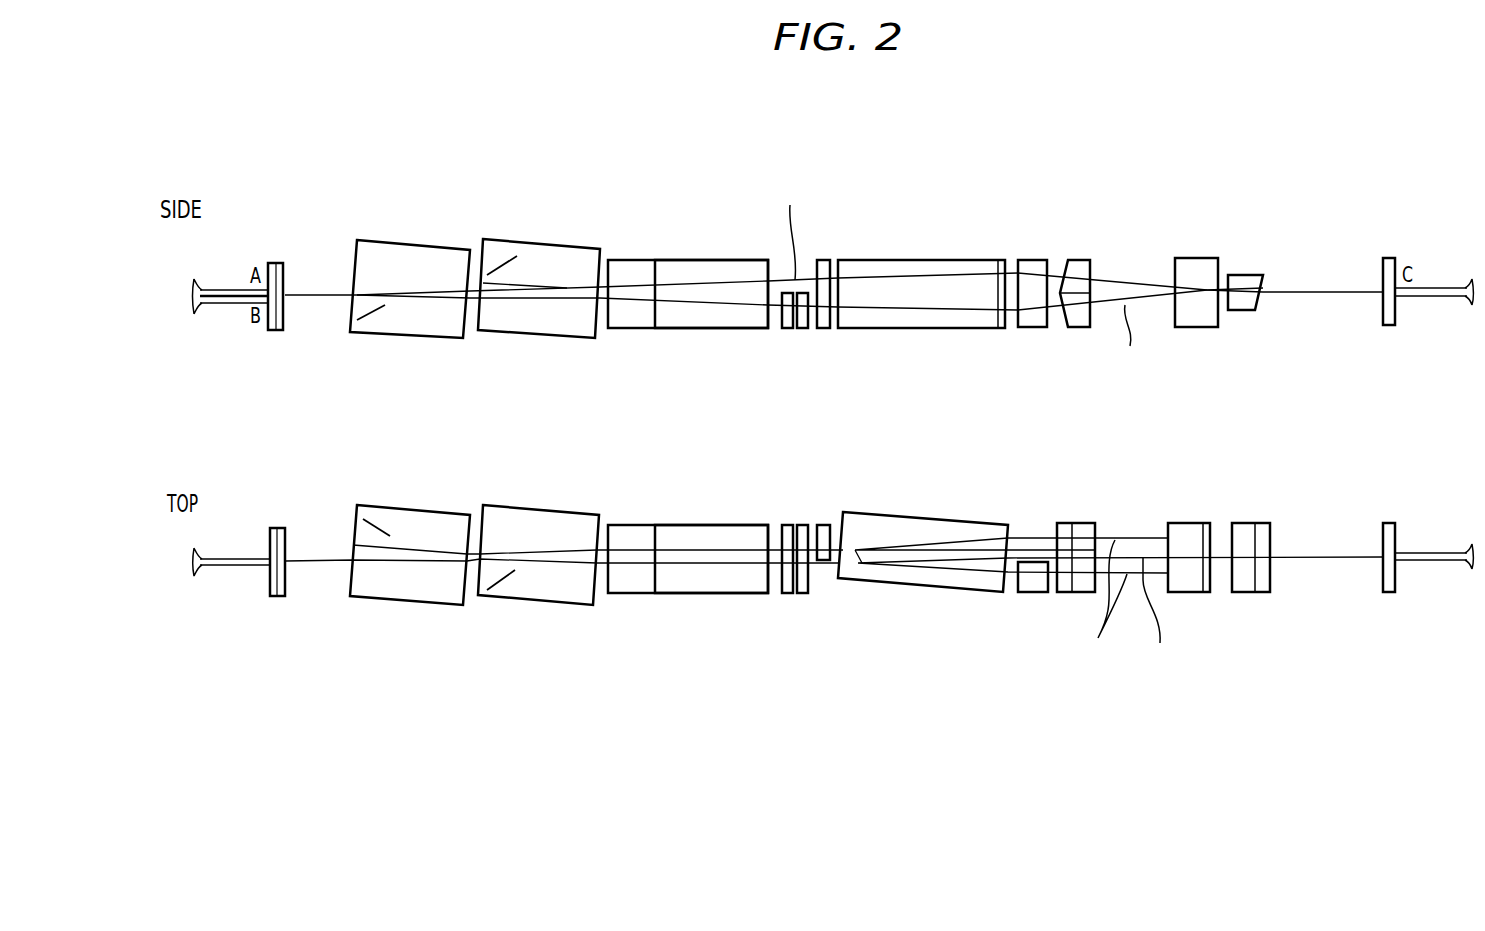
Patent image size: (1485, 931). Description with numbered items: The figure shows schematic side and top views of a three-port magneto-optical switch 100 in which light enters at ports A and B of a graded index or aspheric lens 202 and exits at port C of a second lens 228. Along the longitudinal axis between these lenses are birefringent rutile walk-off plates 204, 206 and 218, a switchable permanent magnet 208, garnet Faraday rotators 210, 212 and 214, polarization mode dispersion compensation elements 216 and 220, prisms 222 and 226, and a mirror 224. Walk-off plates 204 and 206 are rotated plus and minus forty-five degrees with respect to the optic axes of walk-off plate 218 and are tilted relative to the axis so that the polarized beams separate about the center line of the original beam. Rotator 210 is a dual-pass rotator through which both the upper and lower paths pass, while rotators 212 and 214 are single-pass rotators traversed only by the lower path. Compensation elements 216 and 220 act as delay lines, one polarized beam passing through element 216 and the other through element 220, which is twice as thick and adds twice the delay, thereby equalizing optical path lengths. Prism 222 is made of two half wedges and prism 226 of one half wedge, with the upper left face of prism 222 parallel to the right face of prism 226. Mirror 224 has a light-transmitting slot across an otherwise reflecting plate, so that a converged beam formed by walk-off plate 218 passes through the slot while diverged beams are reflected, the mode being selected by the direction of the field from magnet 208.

The three-port magneto-optical switch 100 is at (1090, 147).
The graded index or aspheric lens 202 is at (276, 330).
The birefringent rutile walk-off plate 204 is at (403, 336).
The birefringent rutile walk-off plate 206 is at (535, 337).
The switchable permanent magnet 208 is at (707, 328).
The Faraday rotator 210 is at (653, 328).
The Faraday rotator 212 is at (782, 328).
The Faraday rotator 214 is at (800, 328).
The polarization mode dispersion compensation element 216 is at (827, 328).
The birefringent rutile walk-off plate 218 is at (923, 328).
The polarization mode dispersion compensation element 220 is at (1031, 562).
The prism 222 is at (1078, 327).
The mirror 224 is at (1187, 327).
The prism 226 is at (1243, 310).
The graded index or aspheric lens 228 is at (1388, 325).